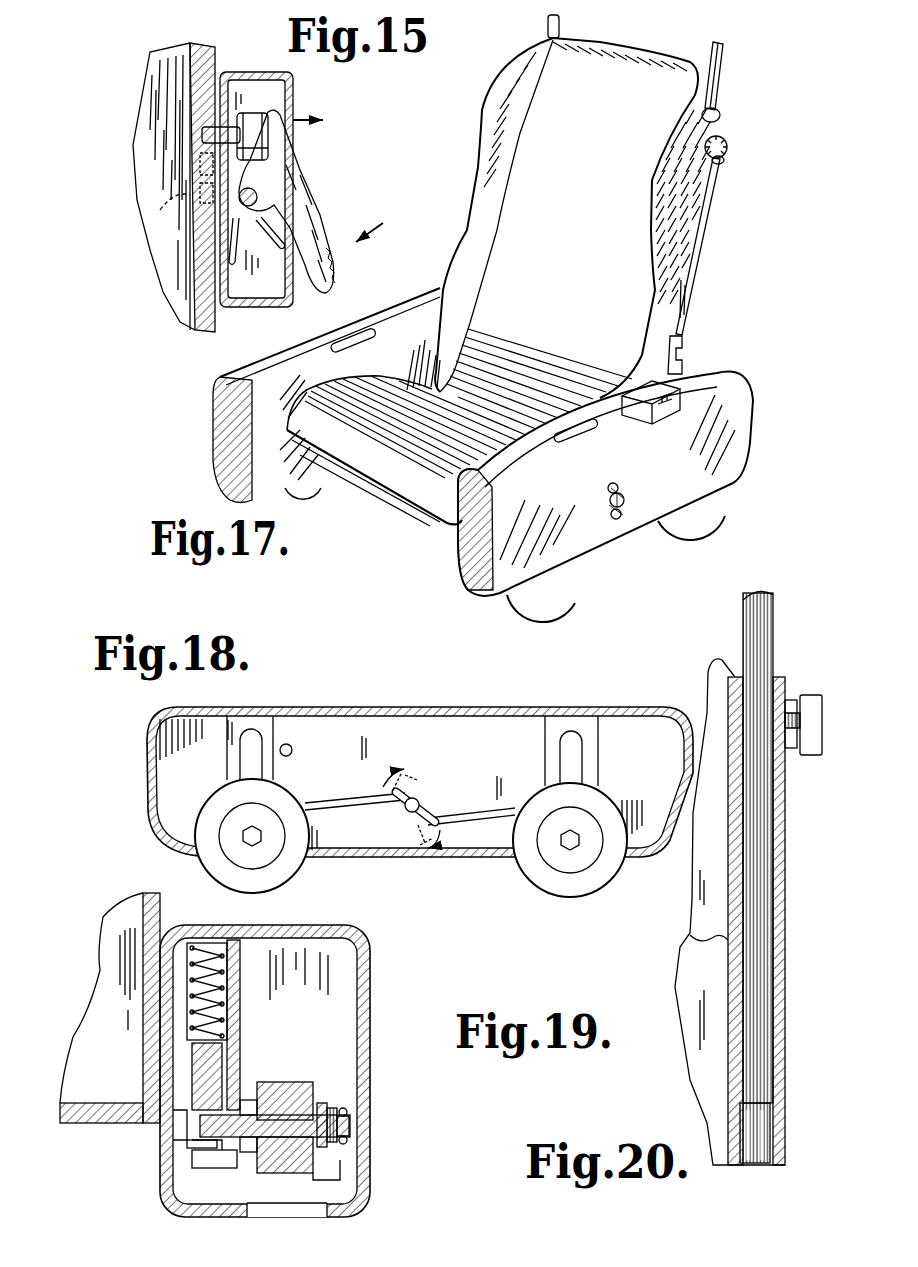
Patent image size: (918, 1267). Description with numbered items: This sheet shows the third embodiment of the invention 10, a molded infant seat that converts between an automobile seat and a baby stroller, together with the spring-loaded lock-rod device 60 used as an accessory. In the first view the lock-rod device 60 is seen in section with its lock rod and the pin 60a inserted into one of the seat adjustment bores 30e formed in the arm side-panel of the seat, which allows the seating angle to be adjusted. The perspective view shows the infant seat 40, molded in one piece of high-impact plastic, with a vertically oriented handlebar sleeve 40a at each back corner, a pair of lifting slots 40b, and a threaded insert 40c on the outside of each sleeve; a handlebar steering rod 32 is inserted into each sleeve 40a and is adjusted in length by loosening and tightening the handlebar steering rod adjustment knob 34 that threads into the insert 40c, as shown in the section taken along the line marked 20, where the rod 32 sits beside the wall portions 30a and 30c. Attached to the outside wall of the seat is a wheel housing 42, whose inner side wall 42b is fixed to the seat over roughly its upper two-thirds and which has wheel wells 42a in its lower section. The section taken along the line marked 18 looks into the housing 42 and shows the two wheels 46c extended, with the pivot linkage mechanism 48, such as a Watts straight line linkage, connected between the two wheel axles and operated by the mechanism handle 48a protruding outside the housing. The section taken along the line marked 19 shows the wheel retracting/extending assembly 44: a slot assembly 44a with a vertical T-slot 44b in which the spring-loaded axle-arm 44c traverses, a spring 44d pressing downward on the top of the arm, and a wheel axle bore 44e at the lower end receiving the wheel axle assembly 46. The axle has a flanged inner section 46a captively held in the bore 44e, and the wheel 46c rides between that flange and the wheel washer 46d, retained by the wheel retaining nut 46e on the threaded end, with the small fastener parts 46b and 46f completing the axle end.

In FIG. 17, the third embodiment of the invention 10 is at (436, 131).
In FIG. 17, the section line 18— 18 is at (832, 380).
In FIG. 18, the section line 19— 19 is at (523, 672).
In FIG. 17, the section line 20— 20 is at (731, 20).
In FIG. 20, the wall panel 30a is at (688, 938).
In FIG. 20, the clamp bracket 30c is at (790, 703).
In FIG. 15, the seat adjustment bores 30e is at (165, 252).
In FIG. 17, the handlebar steering rods 32 is at (722, 58).
In FIG. 20, the handlebar steering rods 32 is at (753, 617).
In FIG. 17, the handlebar steering rod adjustment knob 34 is at (724, 160).
In FIG. 20, the handlebar steering rod adjustment knob 34 is at (813, 750).
In FIG. 17, the infant seat 40 is at (687, 243).
In FIG. 19, the infant seat 40 is at (143, 900).
In FIG. 17, the handlebar sleeves 40a is at (722, 112).
In FIG. 17, the lifting slots 40b is at (388, 343).
In FIG. 17, the threaded insert 40c is at (727, 144).
In FIG. 18, the wheel housing 42 is at (380, 711).
In FIG. 19, the wheel housing 42 is at (370, 947).
In FIG. 19, the wheel wells 42a is at (298, 1212).
In FIG. 19, the inner side wall 42b is at (175, 1120).
In FIG. 19, the wheel retracting/extending assembly 44 is at (302, 1067).
In FIG. 19, the slot assembly 44a is at (240, 991).
In FIG. 18, the vertical T-slot 44b is at (258, 765).
In FIG. 19, the vertical T-slot 44b is at (243, 1060).
In FIG. 19, the spring-loaded axle-arm 44c is at (266, 1094).
In FIG. 19, the spring 44d is at (260, 1025).
In FIG. 19, the wheel axle bore 44e is at (188, 1170).
In FIG. 19, the wheel axle assembly 46 is at (346, 1160).
In FIG. 19, the flanged inner section 46a is at (173, 1140).
In FIG. 19, the axle nut 46b is at (338, 1135).
In FIG. 17, the wheel 46c is at (722, 493).
In FIG. 18, the wheel 46c is at (285, 866).
In FIG. 19, the wheel 46c is at (290, 1085).
In FIG. 19, the wheel washer 46d is at (327, 1103).
In FIG. 19, the wheel retaining nut 46e is at (325, 1158).
In FIG. 19, the threaded end 46f is at (350, 1124).
In FIG. 18, the pivot linkage mechanism 48 is at (448, 796).
In FIG. 17, the mechanism handle 48a is at (620, 521).
In FIG. 18, the mechanism handle 48a is at (412, 797).
In FIG. 15, the spring-loaded lock-rod device 60 is at (293, 92).
In FIG. 15, the locking pin 60a is at (232, 72).